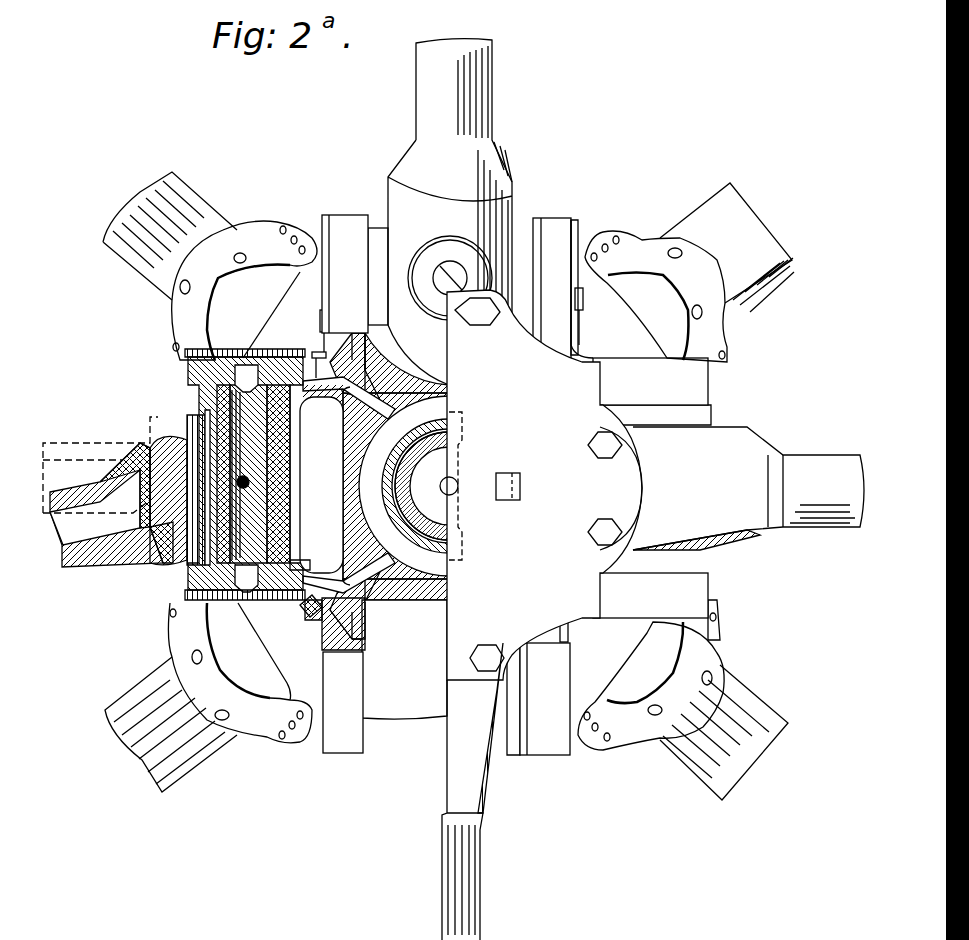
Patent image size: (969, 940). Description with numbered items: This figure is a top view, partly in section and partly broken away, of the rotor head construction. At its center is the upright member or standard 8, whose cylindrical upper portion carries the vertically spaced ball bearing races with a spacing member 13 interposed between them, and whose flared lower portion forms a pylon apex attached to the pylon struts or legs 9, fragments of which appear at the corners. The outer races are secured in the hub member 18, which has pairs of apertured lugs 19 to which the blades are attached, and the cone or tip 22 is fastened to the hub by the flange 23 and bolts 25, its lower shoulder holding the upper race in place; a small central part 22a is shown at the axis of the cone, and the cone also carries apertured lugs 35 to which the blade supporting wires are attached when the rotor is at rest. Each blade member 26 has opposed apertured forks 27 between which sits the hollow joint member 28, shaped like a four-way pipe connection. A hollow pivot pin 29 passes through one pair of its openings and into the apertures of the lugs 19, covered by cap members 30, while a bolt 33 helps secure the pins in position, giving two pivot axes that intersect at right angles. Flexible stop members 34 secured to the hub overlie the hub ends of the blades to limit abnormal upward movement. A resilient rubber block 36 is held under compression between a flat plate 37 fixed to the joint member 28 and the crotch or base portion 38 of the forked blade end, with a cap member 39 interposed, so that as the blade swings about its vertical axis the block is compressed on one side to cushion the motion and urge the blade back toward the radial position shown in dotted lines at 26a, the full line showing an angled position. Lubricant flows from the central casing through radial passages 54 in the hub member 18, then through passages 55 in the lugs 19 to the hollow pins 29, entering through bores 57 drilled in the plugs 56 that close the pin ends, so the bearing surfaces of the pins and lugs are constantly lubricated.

The upright member or standard 8 is at (402, 474).
The pylon struts or legs 9 is at (195, 205).
The spacing member 13 is at (437, 555).
The hub member 18 is at (352, 480).
The apertured lugs 19 is at (332, 218).
The cone or tip 22 is at (544, 485).
The center pin 22a is at (468, 486).
The flange 23 is at (547, 424).
The bolts 25 is at (600, 527).
The blade member 26 is at (475, 86).
The blade in normal and radial position 26a is at (62, 440).
The forks 27 is at (408, 302).
The hollow joint member 28 is at (378, 226).
The hollow pivot pin 29 is at (290, 493).
The cap members 30 is at (235, 352).
The bolt 33 is at (245, 490).
The flexible stop members 34 is at (653, 683).
The apertured lugs 35 is at (521, 475).
The resilient block 36 is at (155, 440).
The flat plate 37 is at (190, 418).
The crotch or base portion 38 is at (148, 540).
The cap member 39 is at (168, 565).
The passages 54 is at (395, 405).
The passages 55 is at (312, 360).
The plugs 56 is at (235, 600).
The bore 57 is at (248, 392).